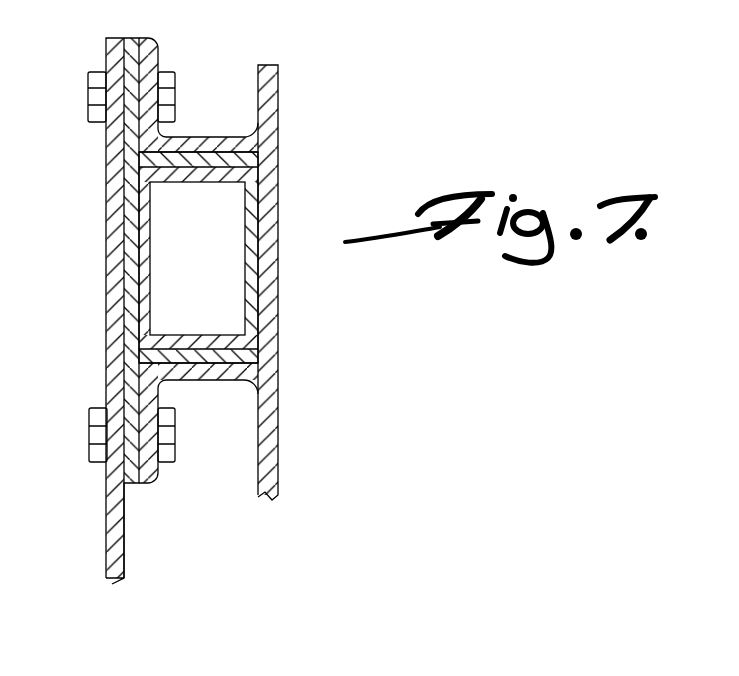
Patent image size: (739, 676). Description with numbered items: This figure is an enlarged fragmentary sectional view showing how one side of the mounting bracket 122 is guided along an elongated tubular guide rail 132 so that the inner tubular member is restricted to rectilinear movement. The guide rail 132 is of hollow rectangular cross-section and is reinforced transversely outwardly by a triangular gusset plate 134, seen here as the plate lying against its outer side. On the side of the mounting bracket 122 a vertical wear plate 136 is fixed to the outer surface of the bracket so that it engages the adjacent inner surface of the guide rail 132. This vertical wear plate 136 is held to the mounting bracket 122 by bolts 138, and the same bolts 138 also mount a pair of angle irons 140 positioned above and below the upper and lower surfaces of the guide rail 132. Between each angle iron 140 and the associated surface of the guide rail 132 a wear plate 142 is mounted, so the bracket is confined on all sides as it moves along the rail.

The mounting bracket 122 is at (107, 293).
The guide rail 132 is at (278, 192).
The gusset plate 134 is at (278, 84).
The vertical wear plate 136 is at (157, 60).
The bolt 138 is at (163, 95).
The angle iron 140 is at (196, 135).
The wear plate 142 is at (262, 129).